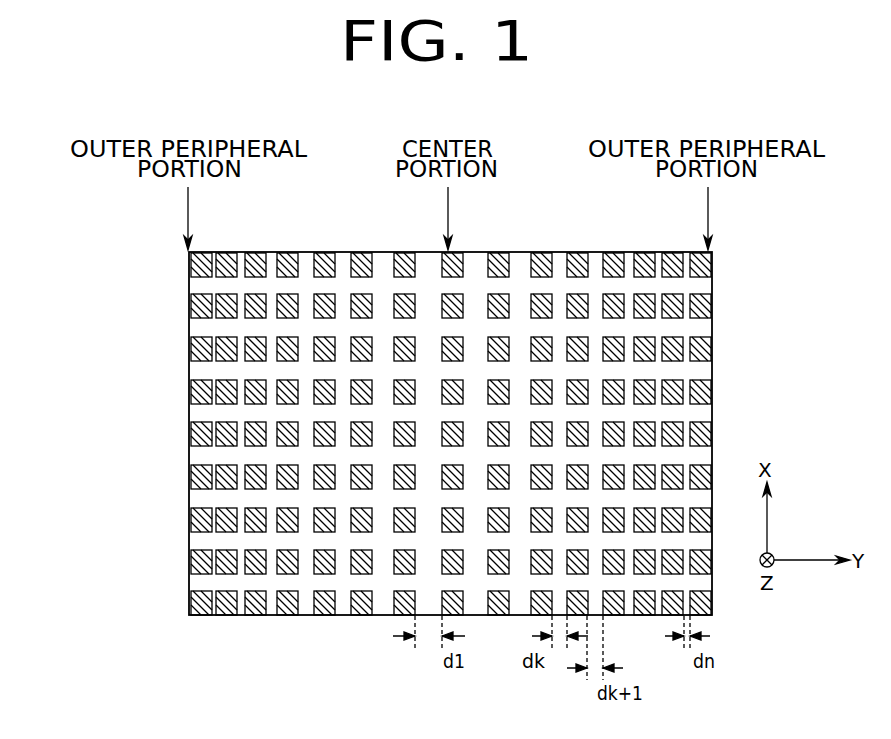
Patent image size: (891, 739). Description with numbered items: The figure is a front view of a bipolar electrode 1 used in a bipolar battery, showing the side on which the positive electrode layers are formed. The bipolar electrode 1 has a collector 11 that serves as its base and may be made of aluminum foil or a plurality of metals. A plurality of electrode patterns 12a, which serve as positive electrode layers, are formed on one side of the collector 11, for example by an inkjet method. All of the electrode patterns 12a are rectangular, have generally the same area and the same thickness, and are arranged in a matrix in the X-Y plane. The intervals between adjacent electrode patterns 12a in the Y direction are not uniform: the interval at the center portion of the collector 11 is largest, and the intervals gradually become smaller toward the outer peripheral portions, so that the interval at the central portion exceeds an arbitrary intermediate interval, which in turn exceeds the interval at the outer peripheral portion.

The bipolar electrode 1 is at (170, 290).
The collector 11 is at (473, 600).
The electrode patterns 12a is at (453, 263).